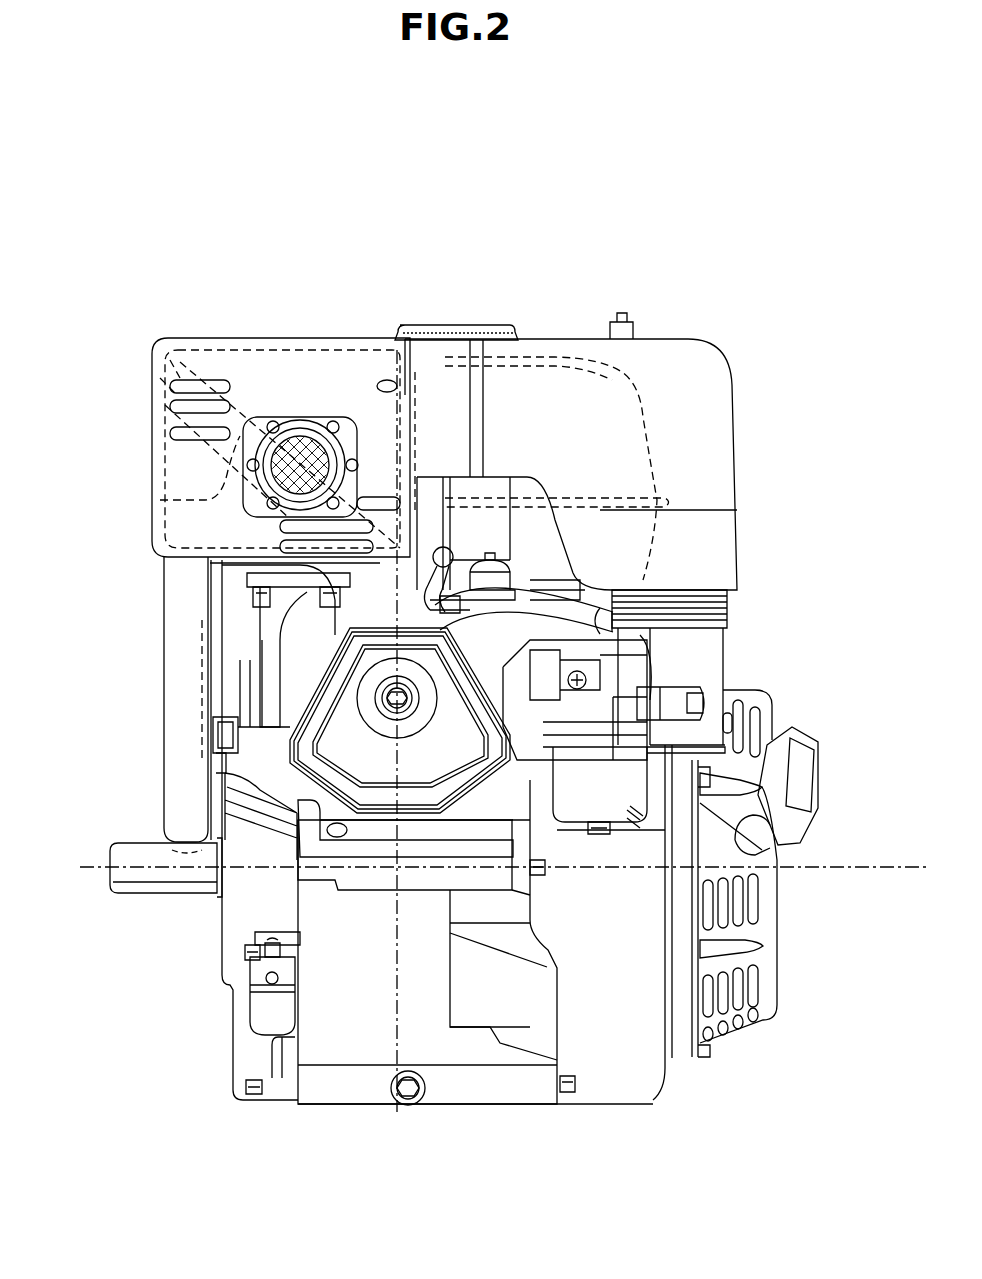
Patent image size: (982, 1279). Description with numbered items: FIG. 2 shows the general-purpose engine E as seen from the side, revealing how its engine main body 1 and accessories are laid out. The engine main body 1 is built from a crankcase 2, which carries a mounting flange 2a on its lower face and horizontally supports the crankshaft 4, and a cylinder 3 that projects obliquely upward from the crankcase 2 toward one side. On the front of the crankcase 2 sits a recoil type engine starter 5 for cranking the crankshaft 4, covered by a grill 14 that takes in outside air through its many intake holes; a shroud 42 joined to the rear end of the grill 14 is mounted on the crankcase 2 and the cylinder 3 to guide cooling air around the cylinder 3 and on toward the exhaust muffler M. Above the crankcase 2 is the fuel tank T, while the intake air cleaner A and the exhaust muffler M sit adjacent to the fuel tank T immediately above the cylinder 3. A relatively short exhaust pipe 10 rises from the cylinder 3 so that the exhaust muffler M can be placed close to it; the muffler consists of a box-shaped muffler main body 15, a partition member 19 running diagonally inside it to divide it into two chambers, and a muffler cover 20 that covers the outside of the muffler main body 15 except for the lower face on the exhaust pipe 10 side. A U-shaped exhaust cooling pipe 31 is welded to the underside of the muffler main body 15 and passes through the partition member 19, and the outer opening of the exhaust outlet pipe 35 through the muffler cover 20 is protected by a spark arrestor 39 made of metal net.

The engine main body 1 is at (320, 1022).
The crankcase 2 is at (365, 977).
The mounting flange 2a is at (347, 1100).
The cylinder 3 is at (247, 778).
The crankshaft 4 is at (142, 888).
The recoil type engine starter 5 is at (778, 723).
The exhaust pipe 10 is at (233, 622).
The grill 14 is at (777, 947).
The muffler main body 15 is at (205, 357).
The partition member 19 is at (158, 503).
The muffler cover 20 is at (158, 425).
The exhaust cooling pipe 31 is at (180, 588).
The exhaust outlet pipe 35 is at (313, 445).
The spark arrestor 39 is at (296, 452).
The shroud 42 is at (618, 973).
The intake air cleaner A is at (605, 446).
The general-purpose engine E is at (270, 705).
The exhaust muffler M is at (268, 335).
The fuel tank T is at (653, 410).